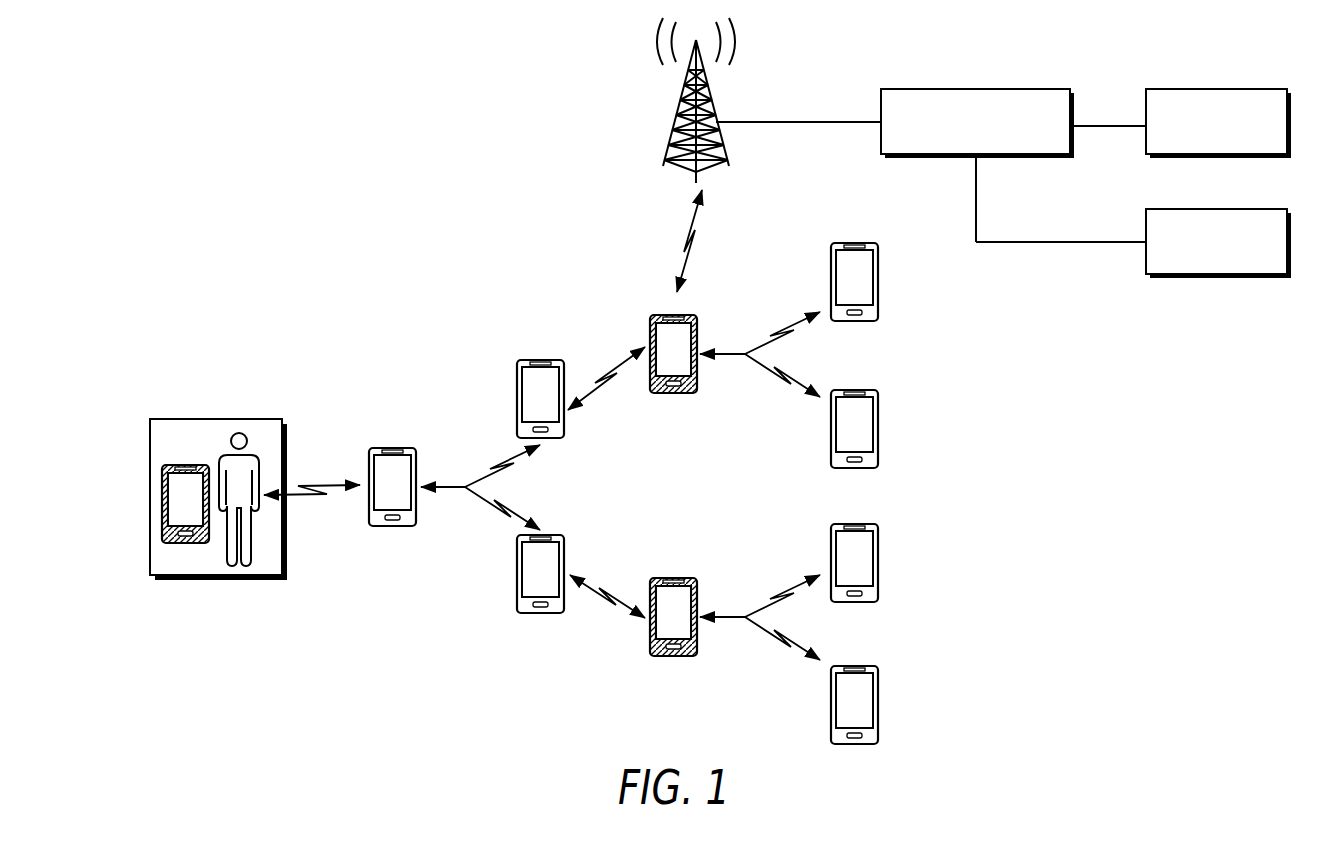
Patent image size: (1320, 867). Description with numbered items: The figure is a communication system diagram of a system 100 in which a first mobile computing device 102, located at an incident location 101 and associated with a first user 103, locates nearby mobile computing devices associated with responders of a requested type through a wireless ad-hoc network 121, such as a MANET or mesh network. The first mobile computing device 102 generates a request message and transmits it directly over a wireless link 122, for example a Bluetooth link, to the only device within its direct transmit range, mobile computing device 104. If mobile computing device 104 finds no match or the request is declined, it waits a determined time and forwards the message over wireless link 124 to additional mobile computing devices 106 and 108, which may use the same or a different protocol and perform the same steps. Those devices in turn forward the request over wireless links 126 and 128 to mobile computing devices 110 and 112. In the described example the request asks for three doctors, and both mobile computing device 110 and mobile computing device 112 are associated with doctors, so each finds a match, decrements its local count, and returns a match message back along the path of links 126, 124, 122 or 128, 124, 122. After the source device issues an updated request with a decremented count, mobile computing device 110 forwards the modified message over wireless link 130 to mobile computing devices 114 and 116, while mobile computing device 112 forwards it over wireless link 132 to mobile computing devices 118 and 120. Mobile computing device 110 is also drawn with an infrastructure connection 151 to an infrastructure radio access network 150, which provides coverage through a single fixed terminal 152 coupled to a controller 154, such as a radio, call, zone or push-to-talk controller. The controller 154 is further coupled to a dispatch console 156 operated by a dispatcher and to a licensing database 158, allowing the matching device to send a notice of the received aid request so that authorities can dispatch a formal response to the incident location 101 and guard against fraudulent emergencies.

The system 100 is at (216, 108).
The incident location 101 is at (218, 419).
The first mobile computing device 102 is at (163, 470).
The first user 103 is at (260, 458).
The mobile computing device 104 is at (394, 448).
The mobile computing device 106 is at (540, 360).
The mobile computing device 108 is at (540, 613).
The mobile computing device 110 is at (656, 315).
The mobile computing device 112 is at (652, 637).
The mobile computing device 114 is at (853, 243).
The mobile computing device 116 is at (853, 390).
The mobile computing device 118 is at (853, 524).
The mobile computing device 120 is at (853, 666).
The ad-hoc network 121 is at (428, 619).
The wireless link 122 is at (302, 490).
The wireless link 124 is at (447, 490).
The wireless link 126 is at (602, 372).
The wireless link 128 is at (612, 594).
The wireless link 130 is at (730, 354).
The wireless link 132 is at (760, 630).
The infrastructure radio access network 150 is at (612, 76).
The wireless infrastructure link 151 is at (688, 250).
The fixed terminal 152 is at (670, 157).
The controller 154 is at (976, 89).
The dispatch console 156 is at (1216, 89).
The licensing database 158 is at (1216, 209).